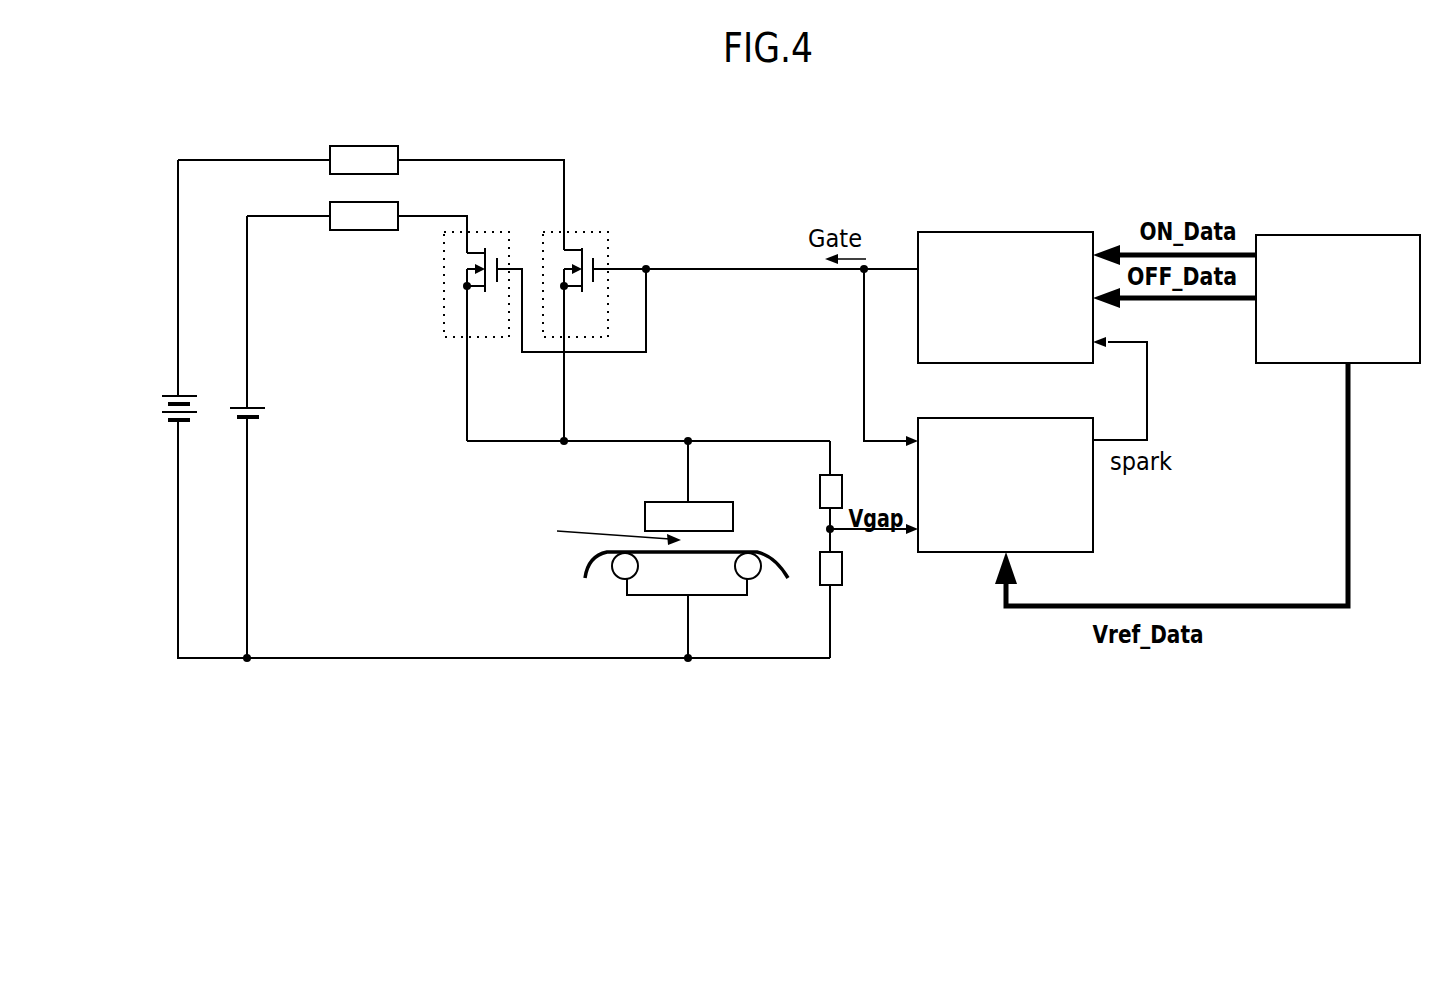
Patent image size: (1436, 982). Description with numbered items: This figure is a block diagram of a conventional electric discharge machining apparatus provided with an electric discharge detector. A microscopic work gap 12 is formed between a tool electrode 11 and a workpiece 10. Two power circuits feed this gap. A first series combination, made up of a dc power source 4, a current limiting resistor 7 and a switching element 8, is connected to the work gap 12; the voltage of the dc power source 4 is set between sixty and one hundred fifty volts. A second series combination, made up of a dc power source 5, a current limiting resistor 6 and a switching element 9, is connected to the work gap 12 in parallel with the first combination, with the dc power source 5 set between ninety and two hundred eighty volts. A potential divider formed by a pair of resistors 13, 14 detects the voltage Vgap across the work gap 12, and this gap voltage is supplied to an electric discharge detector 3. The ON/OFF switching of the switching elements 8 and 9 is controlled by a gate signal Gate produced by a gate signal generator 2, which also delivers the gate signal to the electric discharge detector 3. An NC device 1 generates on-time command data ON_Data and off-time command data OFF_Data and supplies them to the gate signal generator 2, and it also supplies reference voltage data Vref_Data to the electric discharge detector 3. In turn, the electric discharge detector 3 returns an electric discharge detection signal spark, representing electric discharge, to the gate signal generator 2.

The NC device 1 is at (1344, 235).
The gate signal generator 2 is at (1011, 232).
The electric discharge detector 3 is at (1093, 526).
The dc power source 4 is at (270, 422).
The dc power source 5 is at (157, 400).
The current limiting resistor 6 is at (371, 146).
The current limiting resistor 7 is at (365, 230).
The switching element 8 is at (444, 325).
The switching element 9 is at (595, 232).
The workpiece 10 is at (656, 501).
The tool electrode 11 is at (588, 573).
The work gap 12 is at (600, 527).
The resistor 13 is at (820, 489).
The resistor 14 is at (842, 578).